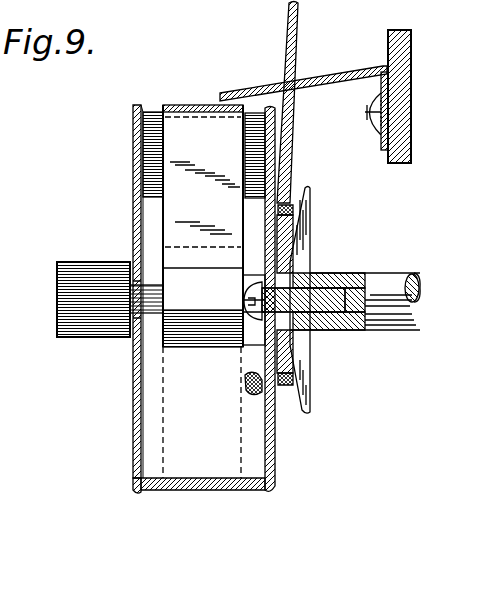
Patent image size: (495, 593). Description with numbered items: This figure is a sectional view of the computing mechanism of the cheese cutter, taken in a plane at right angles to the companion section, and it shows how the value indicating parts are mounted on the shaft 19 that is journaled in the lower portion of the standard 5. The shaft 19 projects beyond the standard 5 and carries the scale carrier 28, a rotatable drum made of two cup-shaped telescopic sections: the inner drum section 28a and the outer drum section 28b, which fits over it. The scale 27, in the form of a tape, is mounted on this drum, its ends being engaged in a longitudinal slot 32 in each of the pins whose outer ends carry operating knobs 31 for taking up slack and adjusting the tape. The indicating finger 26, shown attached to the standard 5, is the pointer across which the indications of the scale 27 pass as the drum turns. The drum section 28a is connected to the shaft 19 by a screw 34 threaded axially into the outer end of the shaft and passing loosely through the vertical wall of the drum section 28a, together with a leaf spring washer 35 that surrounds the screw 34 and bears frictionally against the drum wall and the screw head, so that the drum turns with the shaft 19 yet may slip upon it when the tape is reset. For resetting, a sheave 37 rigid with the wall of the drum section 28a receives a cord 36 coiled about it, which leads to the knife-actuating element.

The standard 5 is at (412, 78).
The shaft 19 is at (411, 320).
The indicating finger 26 is at (332, 78).
The scale 27 is at (174, 107).
The scale carrier 28 is at (281, 451).
The drum section 28a is at (275, 468).
The drum section 28b is at (134, 428).
The operating knob 31 is at (58, 332).
The longitudinal slot 32 is at (157, 112).
The screw 34 is at (350, 313).
The leaf spring washer 35 is at (247, 352).
The cord 36 is at (292, 148).
The sheave 37 is at (311, 378).